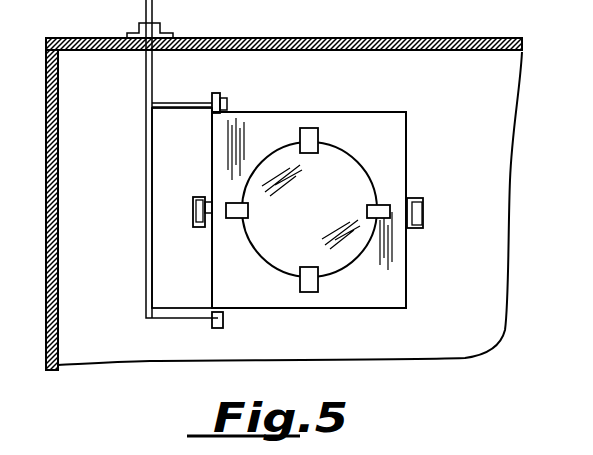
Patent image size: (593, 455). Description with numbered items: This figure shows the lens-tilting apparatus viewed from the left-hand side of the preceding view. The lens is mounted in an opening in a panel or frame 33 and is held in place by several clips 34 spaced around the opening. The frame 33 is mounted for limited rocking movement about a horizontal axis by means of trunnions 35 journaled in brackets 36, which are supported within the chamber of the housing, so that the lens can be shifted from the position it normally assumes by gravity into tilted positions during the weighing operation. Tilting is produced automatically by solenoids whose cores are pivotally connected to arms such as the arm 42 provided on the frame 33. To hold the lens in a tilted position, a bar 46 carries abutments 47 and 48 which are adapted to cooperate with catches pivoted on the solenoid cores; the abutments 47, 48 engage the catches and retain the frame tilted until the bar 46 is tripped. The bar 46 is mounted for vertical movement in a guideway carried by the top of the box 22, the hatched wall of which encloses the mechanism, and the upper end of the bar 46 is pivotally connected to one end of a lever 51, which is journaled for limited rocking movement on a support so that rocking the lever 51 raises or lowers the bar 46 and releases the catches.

The box 22 is at (358, 40).
The panel or frame 33 is at (377, 299).
The clips 34 is at (318, 140).
The trunnions 35 is at (200, 227).
The brackets 36 is at (197, 198).
The arm 42 is at (212, 112).
The bar 46 is at (150, 189).
The abutment 47 is at (194, 88).
The abutment 48 is at (186, 318).
The lever 51 is at (16, 0).